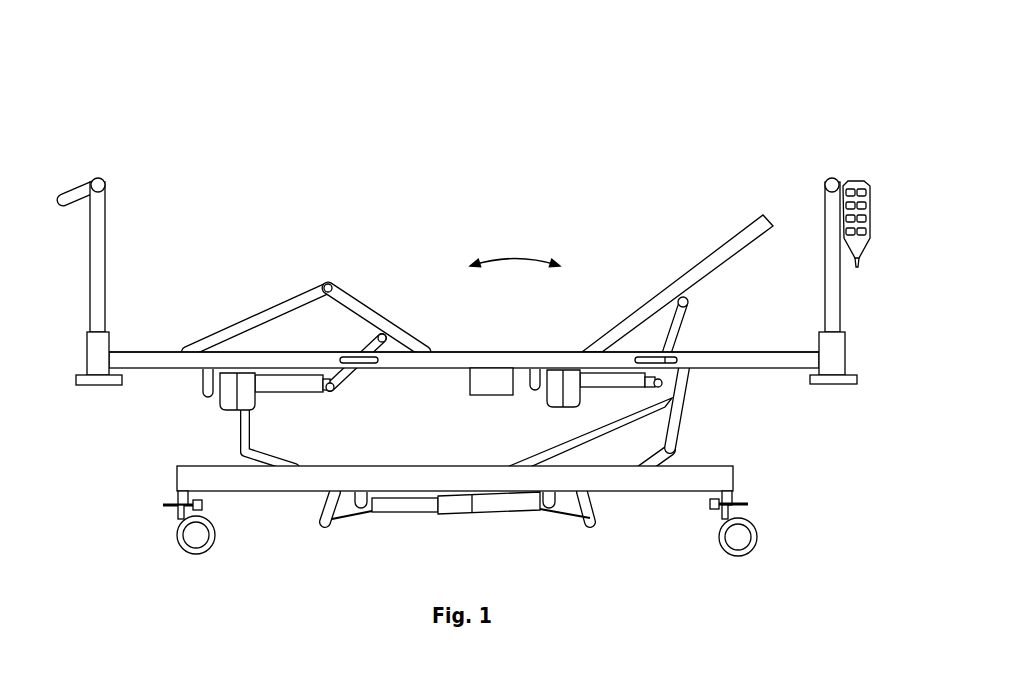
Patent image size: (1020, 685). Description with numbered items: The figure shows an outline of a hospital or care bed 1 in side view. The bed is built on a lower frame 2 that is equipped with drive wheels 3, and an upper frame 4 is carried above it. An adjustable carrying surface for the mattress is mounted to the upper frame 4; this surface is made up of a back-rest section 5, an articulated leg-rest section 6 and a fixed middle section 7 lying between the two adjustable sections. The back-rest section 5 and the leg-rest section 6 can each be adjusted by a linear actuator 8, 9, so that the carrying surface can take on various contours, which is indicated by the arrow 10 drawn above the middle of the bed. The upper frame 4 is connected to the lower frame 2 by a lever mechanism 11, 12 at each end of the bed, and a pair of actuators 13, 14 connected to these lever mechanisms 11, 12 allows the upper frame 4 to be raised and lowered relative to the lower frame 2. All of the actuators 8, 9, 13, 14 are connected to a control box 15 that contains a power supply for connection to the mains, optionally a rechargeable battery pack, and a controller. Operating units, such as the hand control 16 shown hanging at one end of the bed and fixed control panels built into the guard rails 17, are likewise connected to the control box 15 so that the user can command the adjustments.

The hospital or care bed 1 is at (320, 65).
The lower frame 2 is at (667, 483).
The drive wheels 3 is at (180, 548).
The upper frame 4 is at (717, 358).
The back-rest section 5 is at (672, 292).
The articulated leg-rest section 6 is at (333, 287).
The fixed middle section 7 is at (492, 358).
The linear actuator 8 is at (547, 405).
The linear actuator 9 is at (288, 392).
The arrow 10 is at (515, 251).
The lever mechanism 11 is at (679, 443).
The lever mechanism 12 is at (243, 432).
The actuator 13 is at (477, 520).
The actuator 14 is at (390, 498).
The control box 15 is at (502, 390).
The hand control 16 is at (858, 173).
The guard rail 17 is at (80, 187).